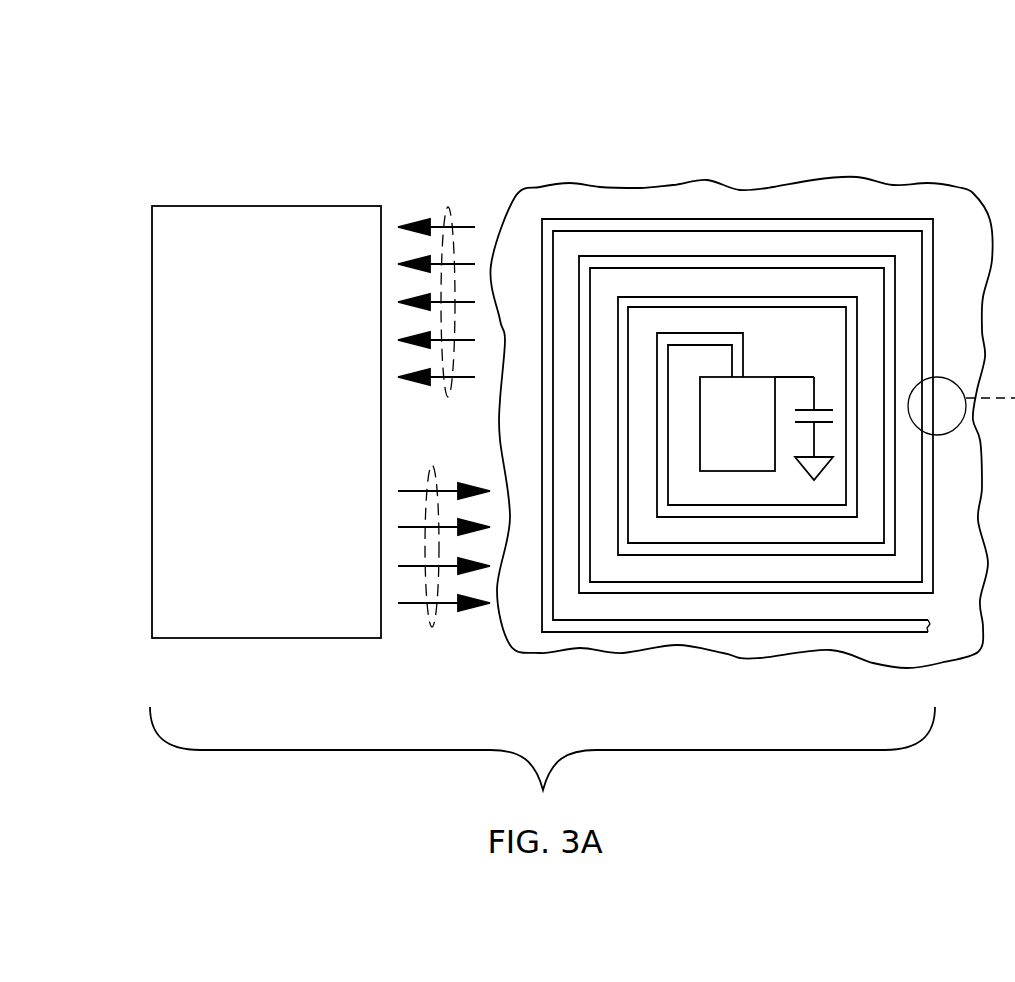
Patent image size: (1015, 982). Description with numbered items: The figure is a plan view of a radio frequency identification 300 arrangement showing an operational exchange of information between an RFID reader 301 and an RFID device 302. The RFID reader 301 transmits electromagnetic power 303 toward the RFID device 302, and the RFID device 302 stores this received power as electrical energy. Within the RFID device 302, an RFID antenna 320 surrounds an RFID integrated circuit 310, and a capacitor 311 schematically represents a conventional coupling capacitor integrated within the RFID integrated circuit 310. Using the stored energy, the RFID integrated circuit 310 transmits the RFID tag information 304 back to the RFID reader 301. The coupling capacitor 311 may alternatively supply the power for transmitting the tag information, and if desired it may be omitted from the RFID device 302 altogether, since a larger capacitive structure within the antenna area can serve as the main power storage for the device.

The radio frequency identification 300 is at (346, 93).
The RFID reader 301 is at (247, 418).
The RFID device 302 is at (707, 176).
The electromagnetic power 303 is at (432, 622).
The RFID tag information 304 is at (447, 212).
The RFID integrated circuit 310 is at (757, 437).
The capacitor 311 is at (810, 365).
The RFID antenna 320 is at (653, 632).